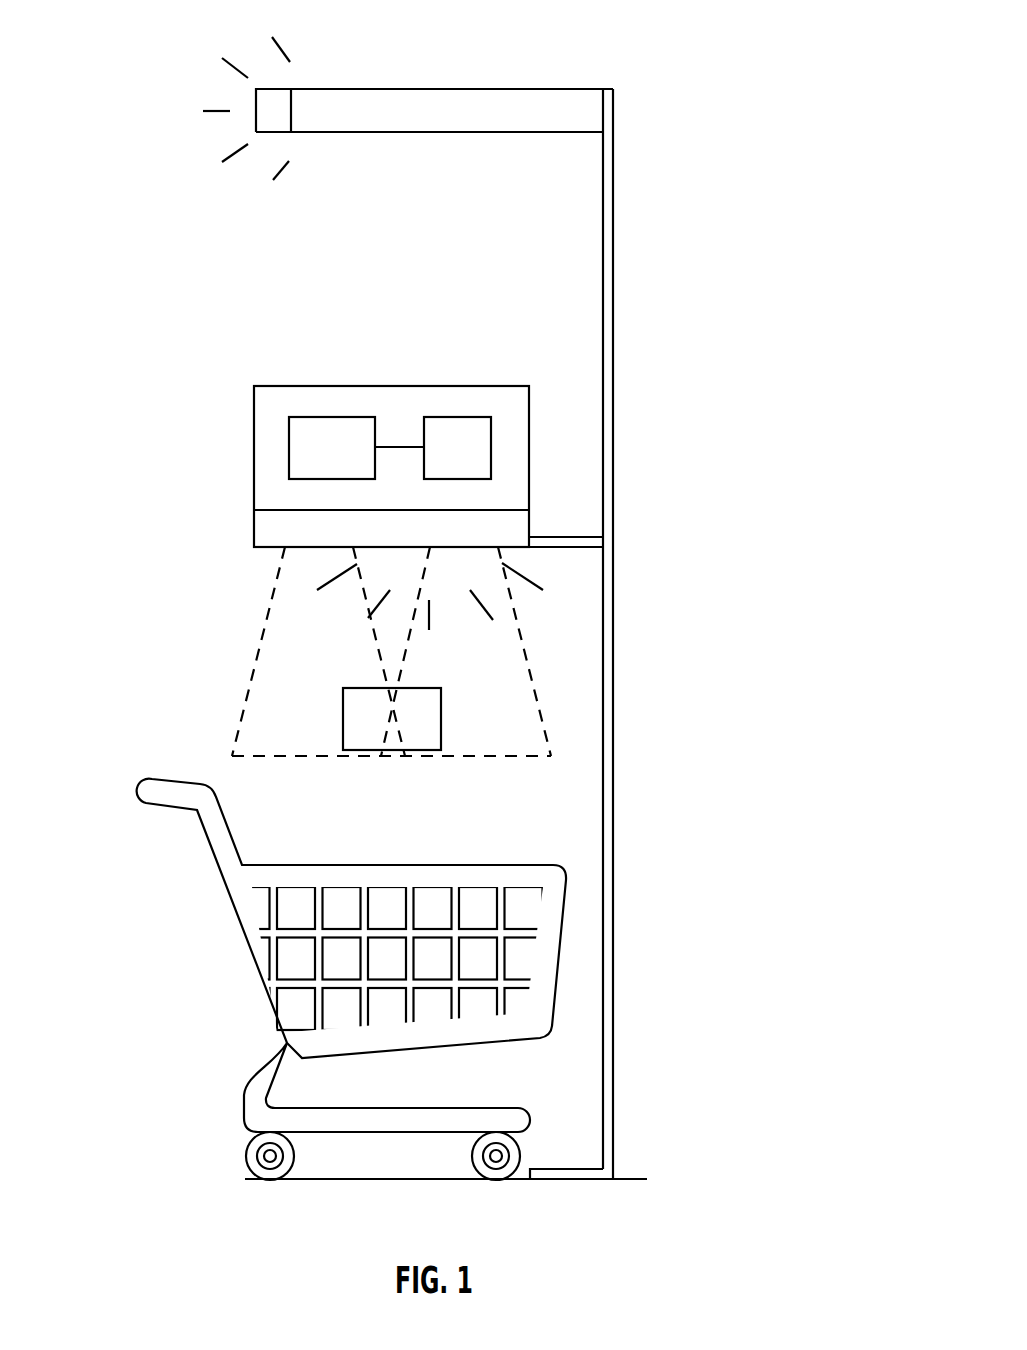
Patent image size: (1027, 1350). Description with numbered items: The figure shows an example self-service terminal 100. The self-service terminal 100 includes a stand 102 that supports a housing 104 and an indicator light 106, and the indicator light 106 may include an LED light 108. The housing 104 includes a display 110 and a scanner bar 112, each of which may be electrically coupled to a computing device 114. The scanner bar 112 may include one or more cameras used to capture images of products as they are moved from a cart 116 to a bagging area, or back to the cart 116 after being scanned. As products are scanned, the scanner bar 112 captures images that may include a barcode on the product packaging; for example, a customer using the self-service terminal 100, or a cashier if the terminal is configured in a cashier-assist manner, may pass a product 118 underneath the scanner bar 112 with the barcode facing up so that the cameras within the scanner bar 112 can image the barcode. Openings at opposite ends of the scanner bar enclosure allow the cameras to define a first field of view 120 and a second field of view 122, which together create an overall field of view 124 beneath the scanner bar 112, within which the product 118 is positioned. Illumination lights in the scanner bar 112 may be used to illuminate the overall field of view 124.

The self-service terminal 100 is at (714, 34).
The stand 102 is at (613, 206).
The housing 104 is at (445, 386).
The indicator light 106 is at (389, 74).
The LED light 108 is at (265, 108).
The display 110 is at (320, 417).
The scanner bar 112 is at (258, 528).
The computing device 114 is at (491, 433).
The cart 116 is at (140, 790).
The product 118 is at (441, 720).
The first field of view 120 is at (260, 646).
The second field of view 122 is at (520, 630).
The overall field of view 124 is at (540, 780).